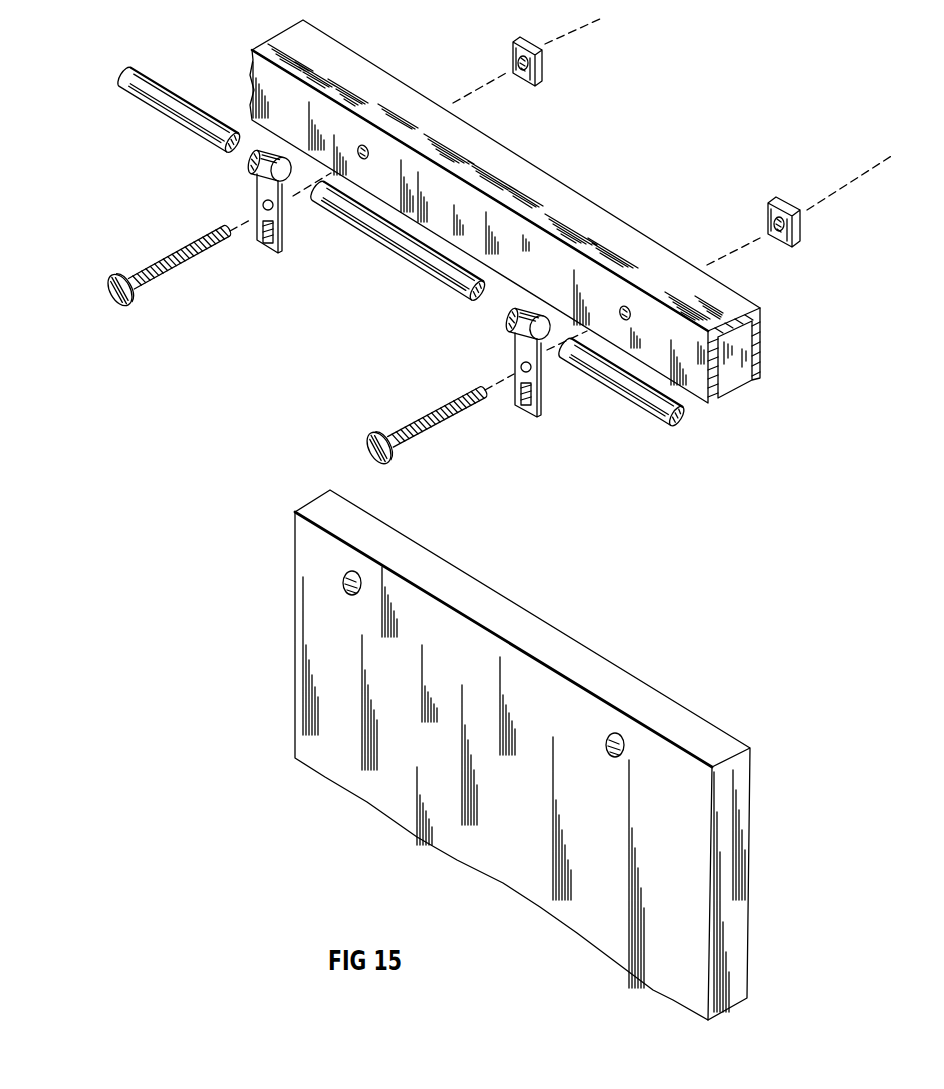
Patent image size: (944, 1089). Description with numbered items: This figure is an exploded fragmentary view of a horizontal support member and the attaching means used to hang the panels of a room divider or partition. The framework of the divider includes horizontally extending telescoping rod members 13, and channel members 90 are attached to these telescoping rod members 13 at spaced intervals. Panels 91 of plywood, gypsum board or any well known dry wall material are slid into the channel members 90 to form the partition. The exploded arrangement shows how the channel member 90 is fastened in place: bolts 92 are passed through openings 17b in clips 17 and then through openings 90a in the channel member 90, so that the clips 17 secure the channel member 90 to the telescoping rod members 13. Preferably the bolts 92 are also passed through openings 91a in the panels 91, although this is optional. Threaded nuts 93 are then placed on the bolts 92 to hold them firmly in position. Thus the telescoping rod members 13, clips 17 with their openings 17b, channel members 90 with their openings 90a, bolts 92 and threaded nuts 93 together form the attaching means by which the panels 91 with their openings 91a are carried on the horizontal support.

The telescoping rod member 13 is at (177, 125).
The clip 17 is at (257, 185).
The opening 17b is at (274, 208).
The channel member 90 is at (761, 347).
The opening 90a is at (367, 156).
The panel 91 is at (428, 756).
The opening 91a is at (360, 578).
The bolt 92 is at (168, 272).
The threaded nut 93 is at (541, 69).